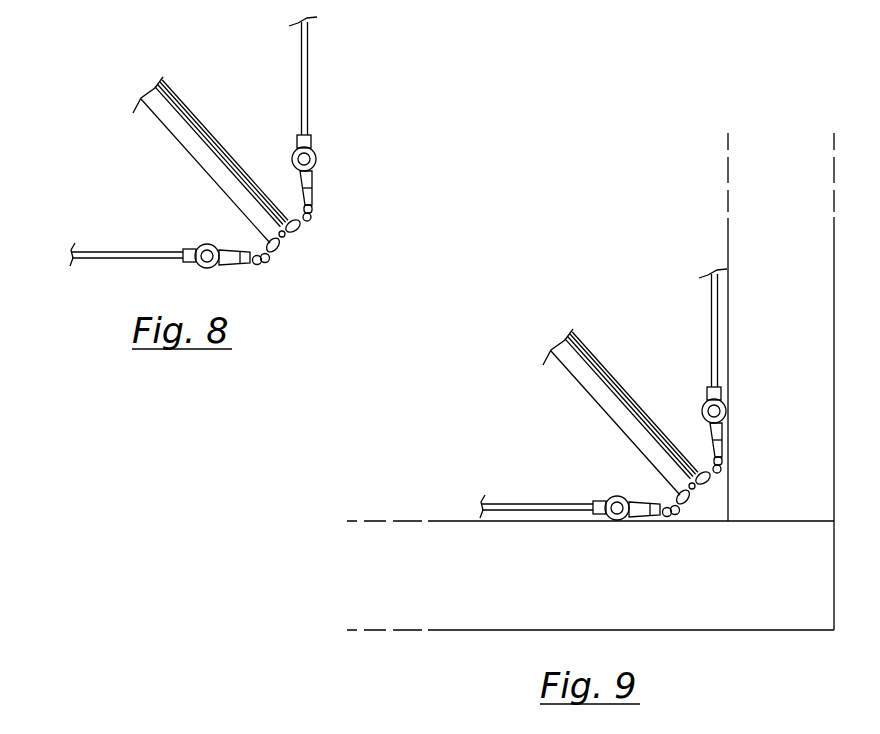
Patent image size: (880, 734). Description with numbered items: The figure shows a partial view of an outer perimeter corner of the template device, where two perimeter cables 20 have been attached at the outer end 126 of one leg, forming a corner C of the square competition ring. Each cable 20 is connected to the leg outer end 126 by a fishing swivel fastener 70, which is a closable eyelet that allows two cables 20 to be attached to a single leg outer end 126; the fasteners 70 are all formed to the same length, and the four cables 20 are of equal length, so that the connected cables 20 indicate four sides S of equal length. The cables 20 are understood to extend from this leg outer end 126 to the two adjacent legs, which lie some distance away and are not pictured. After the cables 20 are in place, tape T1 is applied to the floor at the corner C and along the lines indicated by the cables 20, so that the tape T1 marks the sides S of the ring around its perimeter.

In FIG. 8, the cables 20 is at (306, 97).
In FIG. 8, the fishing swivel fasteners 70 is at (326, 192).
In FIG. 9, the fishing swivel fasteners 70 is at (709, 453).
In FIG. 8, the leg outer end 126 is at (278, 231).
In FIG. 9, the leg outer end 126 is at (745, 497).
In FIG. 9, the tape T1 is at (780, 282).
In FIG. 9, the sides S is at (479, 540).
In FIG. 9, the corner C is at (798, 573).